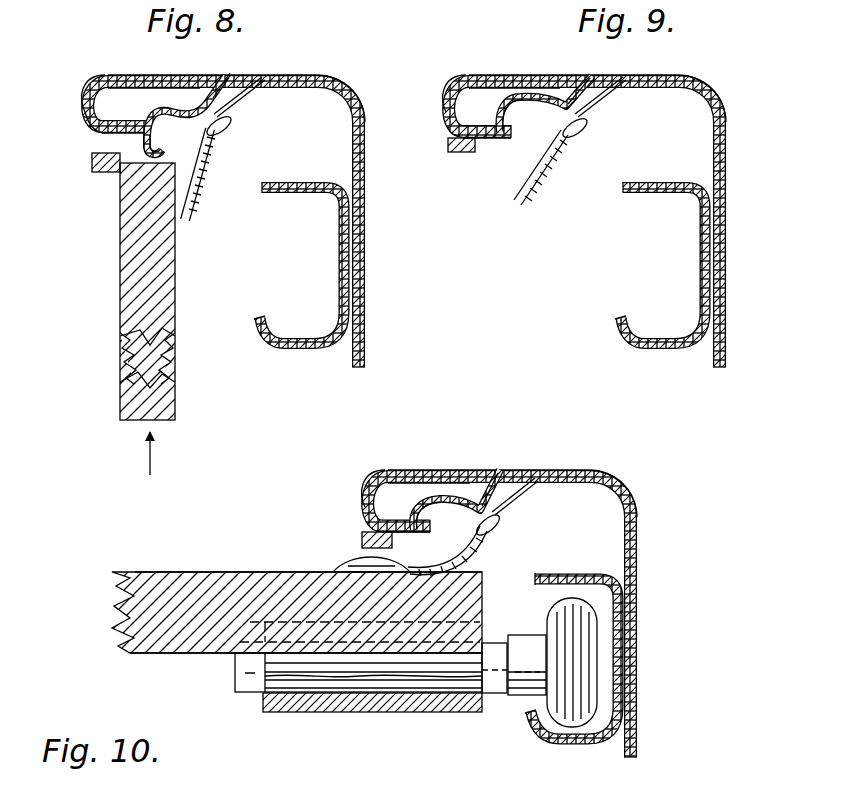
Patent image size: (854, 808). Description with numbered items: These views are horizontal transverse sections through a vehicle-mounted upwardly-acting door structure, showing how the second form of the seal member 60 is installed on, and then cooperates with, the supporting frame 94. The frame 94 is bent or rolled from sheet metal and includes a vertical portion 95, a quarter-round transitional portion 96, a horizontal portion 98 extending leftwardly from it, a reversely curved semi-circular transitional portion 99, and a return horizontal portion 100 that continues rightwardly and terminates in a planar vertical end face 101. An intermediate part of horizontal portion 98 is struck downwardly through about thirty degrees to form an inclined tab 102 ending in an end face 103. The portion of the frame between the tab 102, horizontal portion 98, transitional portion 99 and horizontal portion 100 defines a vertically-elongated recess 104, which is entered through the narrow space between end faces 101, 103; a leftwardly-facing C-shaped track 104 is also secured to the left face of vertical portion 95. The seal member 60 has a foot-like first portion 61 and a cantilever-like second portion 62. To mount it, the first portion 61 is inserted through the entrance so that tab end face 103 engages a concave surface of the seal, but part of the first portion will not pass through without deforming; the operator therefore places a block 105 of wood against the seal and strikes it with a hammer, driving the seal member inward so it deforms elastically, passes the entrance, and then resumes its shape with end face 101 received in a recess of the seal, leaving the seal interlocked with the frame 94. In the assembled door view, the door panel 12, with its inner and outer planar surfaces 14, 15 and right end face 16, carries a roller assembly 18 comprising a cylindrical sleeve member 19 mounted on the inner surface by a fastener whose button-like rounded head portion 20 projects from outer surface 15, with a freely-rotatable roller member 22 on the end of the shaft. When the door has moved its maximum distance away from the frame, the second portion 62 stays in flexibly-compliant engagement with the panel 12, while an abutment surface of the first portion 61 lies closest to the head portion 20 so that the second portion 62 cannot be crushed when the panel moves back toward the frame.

In FIG. 10, the panel 12 is at (136, 565).
In FIG. 10, the inner planar surface 14 is at (157, 655).
In FIG. 10, the outer planar surface 15 is at (183, 572).
In FIG. 10, the right end face 16 is at (483, 608).
In FIG. 10, the roller assembly 18 is at (494, 699).
In FIG. 10, the cylindrical sleeve member 19 is at (340, 712).
In FIG. 10, the rounded head portion 20 is at (342, 562).
In FIG. 10, the roller member 22 is at (571, 670).
In FIG. 8, the seal member 60 is at (228, 72).
In FIG. 9, the seal member 60 is at (593, 75).
In FIG. 10, the seal member 60 is at (510, 468).
In FIG. 8, the first portion 61 is at (173, 105).
In FIG. 9, the first portion 61 is at (538, 80).
In FIG. 10, the first portion 61 is at (451, 478).
In FIG. 8, the second portion 62 is at (201, 189).
In FIG. 9, the second portion 62 is at (546, 182).
In FIG. 10, the second portion 62 is at (484, 548).
In FIG. 8, the frame 94 is at (349, 76).
In FIG. 9, the frame 94 is at (719, 86).
In FIG. 10, the frame 94 is at (609, 469).
In FIG. 8, the vertical portion 95 is at (358, 247).
In FIG. 9, the vertical portion 95 is at (719, 258).
In FIG. 10, the vertical portion 95 is at (629, 632).
In FIG. 8, the quarter-round transitional portion 96 is at (350, 88).
In FIG. 9, the quarter-round transitional portion 96 is at (722, 94).
In FIG. 10, the quarter-round transitional portion 96 is at (627, 487).
In FIG. 8, the horizontal portion 98 is at (135, 75).
In FIG. 9, the horizontal portion 98 is at (510, 75).
In FIG. 10, the horizontal portion 98 is at (418, 470).
In FIG. 8, the reversely curved transitional portion 99 is at (83, 102).
In FIG. 9, the reversely curved transitional portion 99 is at (453, 112).
In FIG. 10, the reversely curved transitional portion 99 is at (363, 490).
In FIG. 8, the horizontal portion 100 is at (117, 142).
In FIG. 9, the horizontal portion 100 is at (455, 122).
In FIG. 10, the horizontal portion 100 is at (363, 507).
In FIG. 8, the end face 101 is at (92, 126).
In FIG. 9, the end face 101 is at (520, 148).
In FIG. 10, the end face 101 is at (432, 528).
In FIG. 8, the tab 102 is at (238, 100).
In FIG. 9, the tab 102 is at (600, 100).
In FIG. 10, the tab 102 is at (519, 496).
In FIG. 8, the end face 103 is at (173, 138).
In FIG. 9, the end face 103 is at (529, 115).
In FIG. 10, the end face 103 is at (441, 515).
In FIG. 8, the recess 104 is at (143, 115).
In FIG. 9, the recess 104 is at (495, 111).
In FIG. 10, the recess 104 is at (411, 508).
In FIG. 8, the block 105 is at (122, 333).